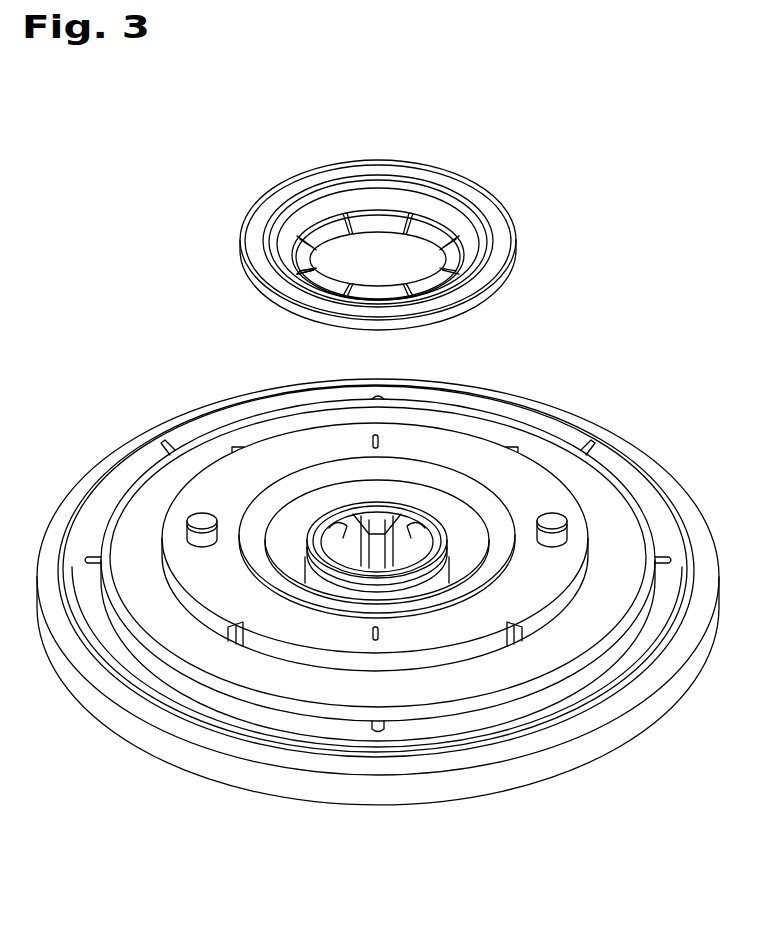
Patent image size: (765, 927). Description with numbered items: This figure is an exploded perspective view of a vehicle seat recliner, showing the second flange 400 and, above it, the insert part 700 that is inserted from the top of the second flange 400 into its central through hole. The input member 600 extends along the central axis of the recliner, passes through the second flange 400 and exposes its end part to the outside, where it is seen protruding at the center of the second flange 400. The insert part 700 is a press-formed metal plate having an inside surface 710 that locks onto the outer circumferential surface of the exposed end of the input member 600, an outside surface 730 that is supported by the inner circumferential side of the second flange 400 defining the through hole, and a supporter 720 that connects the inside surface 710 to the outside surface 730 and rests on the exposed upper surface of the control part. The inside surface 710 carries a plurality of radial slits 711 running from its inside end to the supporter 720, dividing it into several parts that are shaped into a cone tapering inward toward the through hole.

The second flange 400 is at (378, 642).
The input member 600 is at (393, 585).
The insert part 700 is at (399, 213).
The inside surface 710 is at (359, 273).
The slits 711 is at (300, 268).
The supporter 720 is at (470, 247).
The outside surface 730 is at (375, 190).